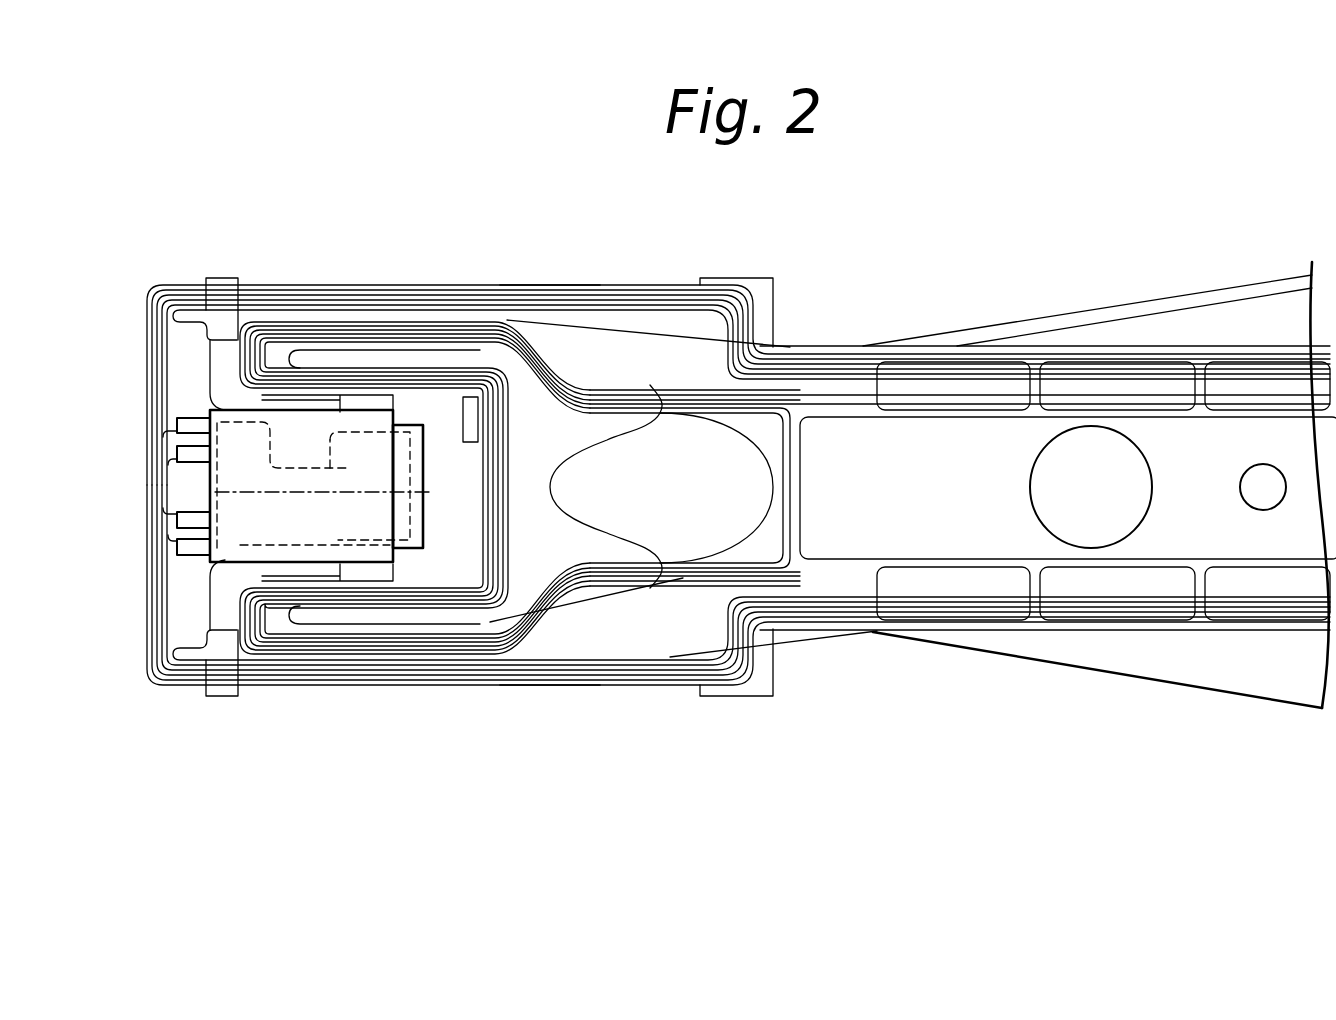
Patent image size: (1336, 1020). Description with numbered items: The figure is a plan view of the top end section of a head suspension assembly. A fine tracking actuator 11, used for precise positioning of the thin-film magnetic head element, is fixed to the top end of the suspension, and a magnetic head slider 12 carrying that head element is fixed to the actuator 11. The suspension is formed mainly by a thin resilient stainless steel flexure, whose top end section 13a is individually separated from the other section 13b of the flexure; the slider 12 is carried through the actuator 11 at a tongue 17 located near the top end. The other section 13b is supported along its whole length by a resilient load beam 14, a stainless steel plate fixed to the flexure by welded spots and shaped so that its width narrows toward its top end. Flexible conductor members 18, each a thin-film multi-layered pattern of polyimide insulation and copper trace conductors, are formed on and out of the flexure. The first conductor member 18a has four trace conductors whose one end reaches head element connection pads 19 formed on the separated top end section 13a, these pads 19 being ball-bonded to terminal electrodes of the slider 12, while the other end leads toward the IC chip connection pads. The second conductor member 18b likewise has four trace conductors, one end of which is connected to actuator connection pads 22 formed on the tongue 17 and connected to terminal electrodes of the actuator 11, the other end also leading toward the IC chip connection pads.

The fine tracking actuator 11 is at (410, 528).
The magnetic head slider 12 is at (380, 556).
The top end section of the flexure 13a is at (213, 323).
The other section of the flexure 13b is at (603, 633).
The load beam 14 is at (1270, 312).
The tongue 17 is at (462, 452).
The flexible conductor members 18 is at (808, 583).
The first conductor member 18a is at (597, 280).
The second conductor member 18b is at (588, 380).
The head element connection pads 19 is at (190, 456).
The actuator connection pads 22 is at (440, 470).